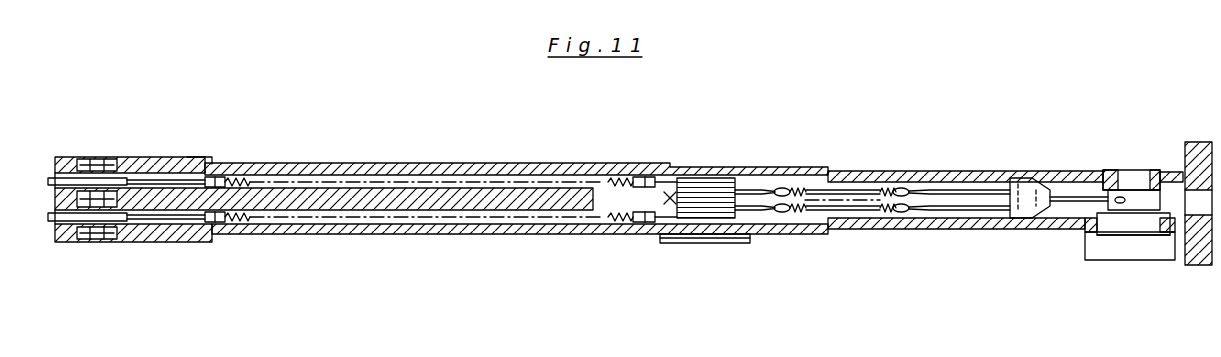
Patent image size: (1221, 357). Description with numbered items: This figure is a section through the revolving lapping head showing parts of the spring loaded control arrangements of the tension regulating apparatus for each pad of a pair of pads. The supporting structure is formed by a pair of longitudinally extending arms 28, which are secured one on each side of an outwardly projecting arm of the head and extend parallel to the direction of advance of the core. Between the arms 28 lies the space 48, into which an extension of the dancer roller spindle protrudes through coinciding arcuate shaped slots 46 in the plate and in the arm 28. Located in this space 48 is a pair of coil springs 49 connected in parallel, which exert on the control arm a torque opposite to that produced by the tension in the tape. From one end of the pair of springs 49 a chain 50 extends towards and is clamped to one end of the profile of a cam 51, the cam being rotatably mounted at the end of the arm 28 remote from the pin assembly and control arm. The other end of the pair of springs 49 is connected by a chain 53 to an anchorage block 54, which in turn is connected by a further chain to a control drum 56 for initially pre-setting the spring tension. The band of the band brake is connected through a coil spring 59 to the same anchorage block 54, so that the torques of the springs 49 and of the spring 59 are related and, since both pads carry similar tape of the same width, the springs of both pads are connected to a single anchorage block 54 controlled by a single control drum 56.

The longitudinally extending arm 28 is at (376, 167).
The arcuate shaped slot 46 is at (1092, 171).
The space 48 is at (628, 222).
The coil spring 49 is at (238, 222).
The chain 50 is at (155, 181).
The cam 51 is at (68, 181).
The chain 53 is at (764, 190).
The anchorage block 54 is at (1026, 186).
The control drum 56 is at (1092, 255).
The coil spring 59 is at (806, 190).